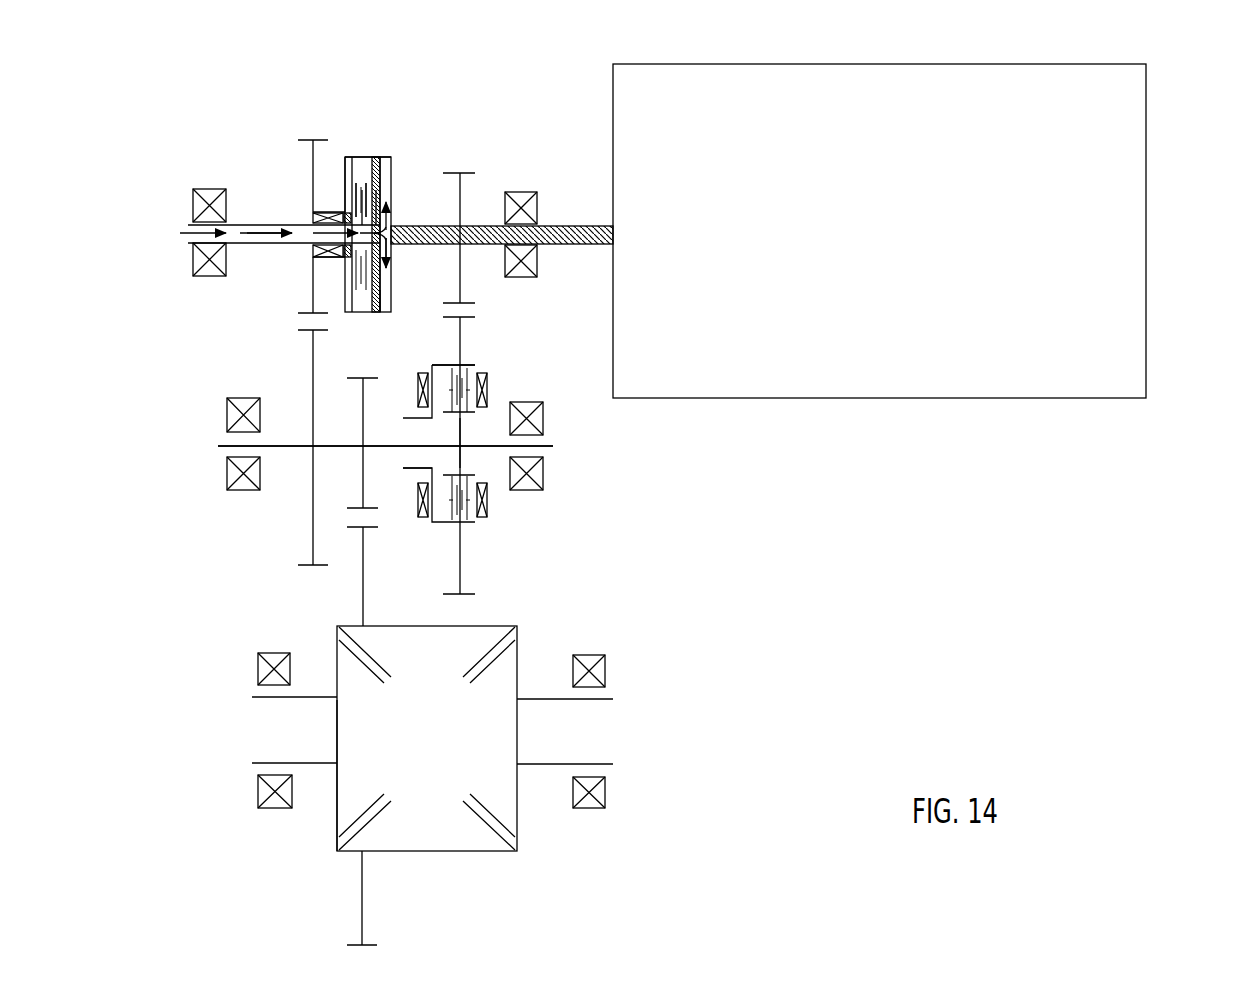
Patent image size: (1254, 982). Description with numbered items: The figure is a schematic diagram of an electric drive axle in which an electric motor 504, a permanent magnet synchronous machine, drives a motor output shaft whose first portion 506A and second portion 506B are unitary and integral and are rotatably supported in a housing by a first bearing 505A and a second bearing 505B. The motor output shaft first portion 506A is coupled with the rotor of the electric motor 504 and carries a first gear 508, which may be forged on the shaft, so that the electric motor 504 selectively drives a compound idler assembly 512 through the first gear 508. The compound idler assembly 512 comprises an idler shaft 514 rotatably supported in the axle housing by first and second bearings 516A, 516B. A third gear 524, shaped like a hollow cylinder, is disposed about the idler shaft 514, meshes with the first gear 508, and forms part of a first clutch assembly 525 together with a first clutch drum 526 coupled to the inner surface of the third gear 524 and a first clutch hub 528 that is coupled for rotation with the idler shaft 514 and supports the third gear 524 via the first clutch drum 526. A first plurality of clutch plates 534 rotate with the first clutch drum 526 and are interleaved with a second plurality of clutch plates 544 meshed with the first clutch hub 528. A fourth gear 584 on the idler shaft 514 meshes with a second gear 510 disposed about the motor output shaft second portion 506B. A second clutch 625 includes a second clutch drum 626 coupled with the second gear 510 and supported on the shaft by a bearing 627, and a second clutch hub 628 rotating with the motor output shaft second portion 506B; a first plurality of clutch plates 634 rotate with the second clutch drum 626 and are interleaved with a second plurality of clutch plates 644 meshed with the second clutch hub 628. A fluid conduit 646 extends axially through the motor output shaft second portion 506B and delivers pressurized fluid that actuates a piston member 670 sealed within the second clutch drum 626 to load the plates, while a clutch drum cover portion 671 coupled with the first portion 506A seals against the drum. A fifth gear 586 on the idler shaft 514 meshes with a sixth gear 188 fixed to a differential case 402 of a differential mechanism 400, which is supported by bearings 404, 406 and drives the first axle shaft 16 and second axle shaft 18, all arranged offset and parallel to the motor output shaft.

The first axle shaft 16 is at (612, 698).
The second axle shaft 18 is at (252, 697).
The sixth gear 188 is at (362, 600).
The differential mechanism 400 is at (560, 842).
The differential case 402 is at (337, 820).
The bearing 404 is at (606, 792).
The bearing 406 is at (258, 792).
The electric motor 504 is at (1068, 120).
The first bearing 505A is at (538, 258).
The second bearing 505B is at (192, 258).
The motor output shaft first portion 506A is at (568, 224).
The motor output shaft second portion 506B is at (270, 245).
The first gear 508 is at (468, 172).
The second gear 510 is at (320, 138).
The compound idler assembly 512 is at (573, 456).
The idler shaft 514 is at (290, 444).
The first bearing 516A is at (545, 420).
The second bearing 516B is at (227, 415).
The third gear 524 is at (470, 597).
The first clutch assembly 525 is at (507, 529).
The first clutch drum 526 is at (476, 363).
The first clutch hub 528 is at (462, 428).
The first plurality of clutch plates 534 is at (440, 366).
The second plurality of clutch plates 544 is at (487, 488).
The fourth gear 584 is at (300, 563).
The fifth gear 586 is at (367, 493).
The second clutch 625 is at (354, 106).
The second clutch drum 626 is at (357, 156).
The bearing 627 is at (310, 213).
The second clutch hub 628 is at (381, 270).
The first plurality of clutch plates 634 is at (365, 156).
The second plurality of clutch plates 644 is at (378, 205).
The fluid conduit 646 is at (266, 230).
The piston member 670 is at (368, 198).
The clutch drum cover portion 671 is at (383, 312).